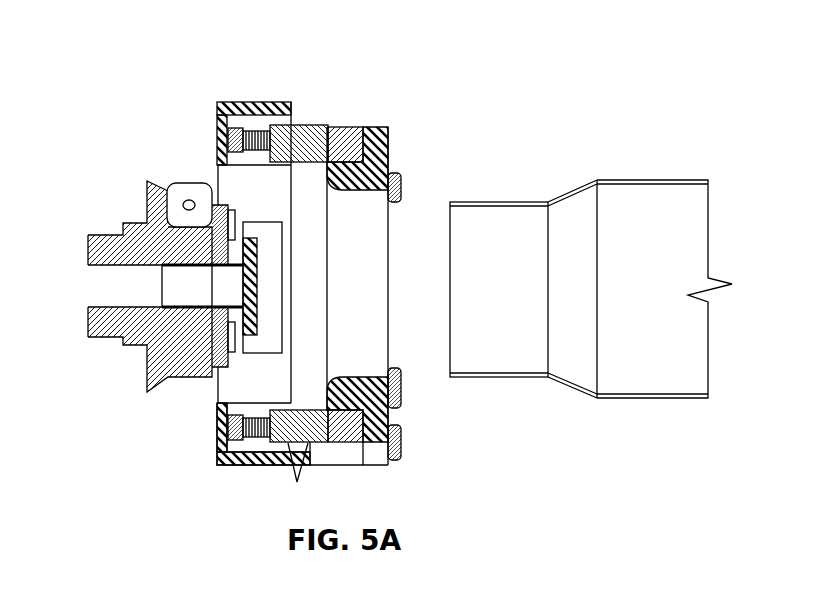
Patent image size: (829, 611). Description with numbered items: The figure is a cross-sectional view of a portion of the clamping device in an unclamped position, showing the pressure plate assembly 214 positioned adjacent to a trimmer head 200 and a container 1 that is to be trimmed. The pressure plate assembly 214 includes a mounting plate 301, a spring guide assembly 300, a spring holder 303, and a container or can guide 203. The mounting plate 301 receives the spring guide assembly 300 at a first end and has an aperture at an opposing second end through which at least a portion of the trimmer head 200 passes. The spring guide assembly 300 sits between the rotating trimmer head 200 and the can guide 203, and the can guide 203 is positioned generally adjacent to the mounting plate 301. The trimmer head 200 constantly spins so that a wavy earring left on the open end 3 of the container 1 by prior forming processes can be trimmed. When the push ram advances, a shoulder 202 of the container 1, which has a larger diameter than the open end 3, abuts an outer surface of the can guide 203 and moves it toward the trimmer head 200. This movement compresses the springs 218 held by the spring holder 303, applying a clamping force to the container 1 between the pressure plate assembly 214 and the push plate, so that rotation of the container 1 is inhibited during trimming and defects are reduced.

The container 1 is at (662, 163).
The open end 3 is at (449, 356).
The trimmer head 200 is at (123, 371).
The shoulder 202 is at (580, 185).
The container or can guide 203 is at (391, 175).
The pressure plate assembly 214 is at (208, 460).
The springs 218 is at (256, 437).
The spring guide assembly 300 is at (258, 292).
The mounting plate 301 is at (230, 102).
The spring holder 303 is at (353, 134).